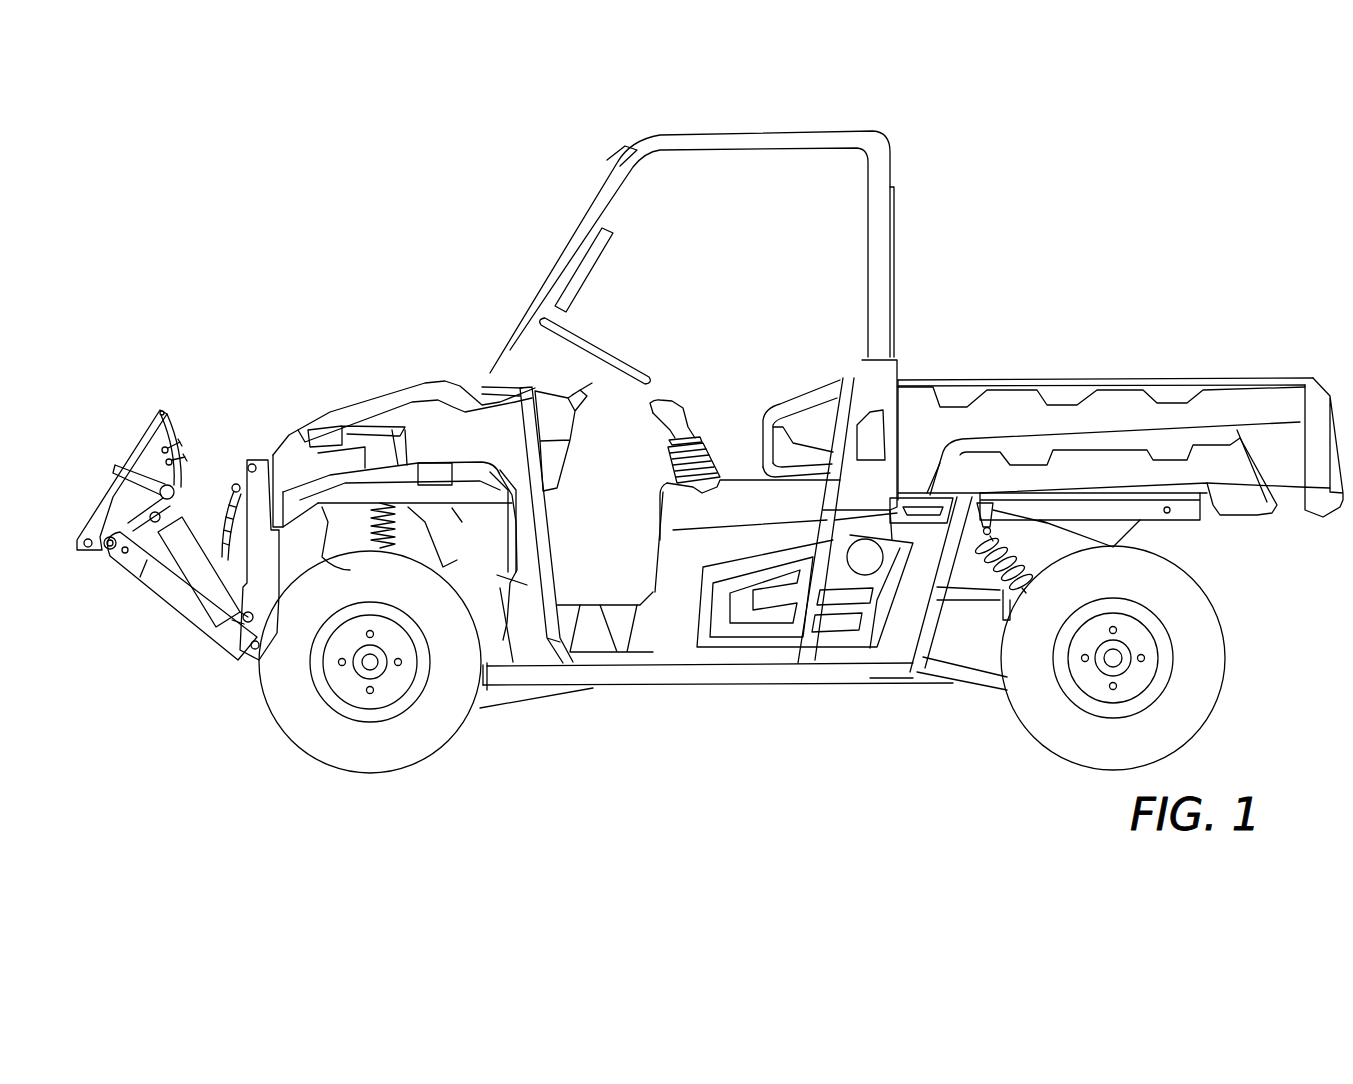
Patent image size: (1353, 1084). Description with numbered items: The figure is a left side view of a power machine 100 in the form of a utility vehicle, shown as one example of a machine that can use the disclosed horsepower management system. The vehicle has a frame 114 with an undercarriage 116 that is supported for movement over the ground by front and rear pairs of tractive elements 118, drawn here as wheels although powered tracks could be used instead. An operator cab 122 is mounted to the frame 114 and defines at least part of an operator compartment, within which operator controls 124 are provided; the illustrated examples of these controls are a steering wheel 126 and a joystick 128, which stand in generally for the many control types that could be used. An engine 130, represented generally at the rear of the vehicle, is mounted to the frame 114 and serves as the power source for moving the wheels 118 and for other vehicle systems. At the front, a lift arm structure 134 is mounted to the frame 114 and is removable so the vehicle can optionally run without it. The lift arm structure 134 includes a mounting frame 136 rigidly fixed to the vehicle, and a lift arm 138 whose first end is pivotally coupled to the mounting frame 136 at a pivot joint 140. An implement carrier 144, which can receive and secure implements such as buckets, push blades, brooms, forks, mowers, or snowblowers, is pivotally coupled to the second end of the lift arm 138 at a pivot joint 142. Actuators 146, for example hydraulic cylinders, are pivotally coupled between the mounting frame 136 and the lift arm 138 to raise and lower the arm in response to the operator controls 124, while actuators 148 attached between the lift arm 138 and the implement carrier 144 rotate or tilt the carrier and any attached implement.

The power machine 100 is at (1036, 113).
The frame 114 is at (657, 697).
The undercarriage 116 is at (748, 682).
The tractive elements 118 is at (375, 750).
The operator cab 122 is at (746, 132).
The operator controls 124 is at (685, 312).
The steering wheel 126 is at (587, 342).
The joystick 128 is at (680, 402).
The engine 130 is at (853, 697).
The lift arm structure 134 is at (221, 347).
The mounting frame 136 is at (260, 468).
The lift arm 138 is at (193, 610).
The pivot joint 140 is at (250, 655).
The pivot joint 142 is at (118, 556).
The implement carrier 144 is at (148, 432).
The actuators 146 is at (233, 478).
The actuators 148 is at (187, 458).